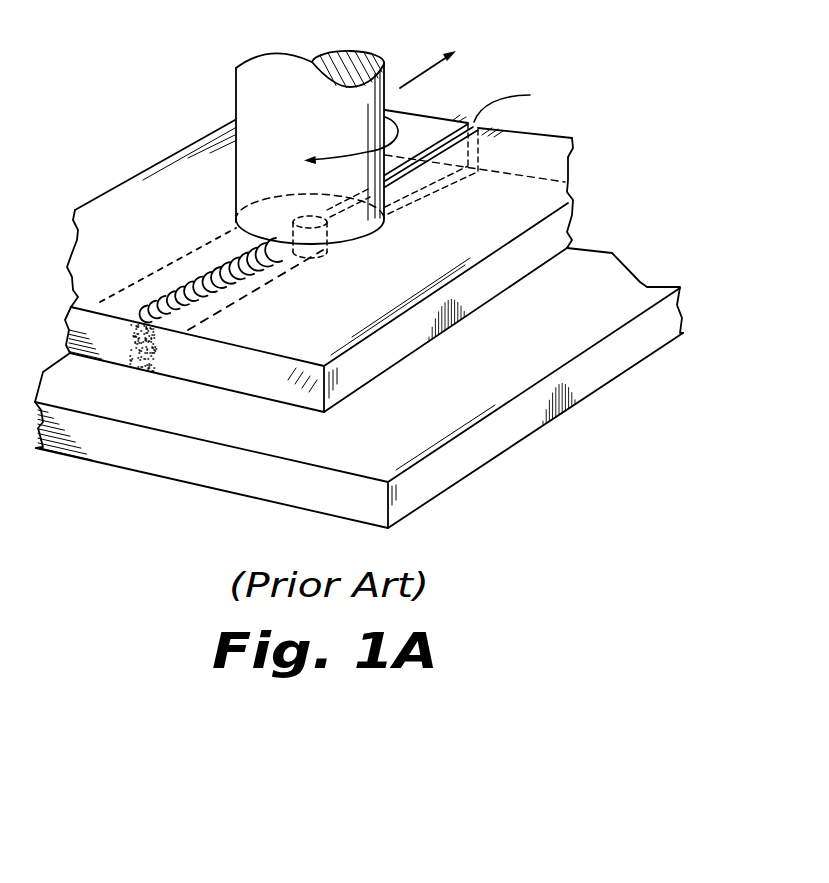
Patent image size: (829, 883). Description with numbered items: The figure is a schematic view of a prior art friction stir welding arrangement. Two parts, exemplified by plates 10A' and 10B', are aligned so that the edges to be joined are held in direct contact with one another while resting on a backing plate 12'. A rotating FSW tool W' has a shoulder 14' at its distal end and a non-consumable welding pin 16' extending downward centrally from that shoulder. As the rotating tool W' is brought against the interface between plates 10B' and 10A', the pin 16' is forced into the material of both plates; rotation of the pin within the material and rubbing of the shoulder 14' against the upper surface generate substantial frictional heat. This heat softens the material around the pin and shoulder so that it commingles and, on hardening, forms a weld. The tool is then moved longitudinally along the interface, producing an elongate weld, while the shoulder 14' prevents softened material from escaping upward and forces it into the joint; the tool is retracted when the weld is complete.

The plate 10B' is at (178, 266).
The plate 10A' is at (464, 261).
The shoulder 14' is at (422, 181).
The welding pin 16' is at (270, 300).
The backing plate 12' is at (359, 388).
The FSW tool W' is at (463, 44).